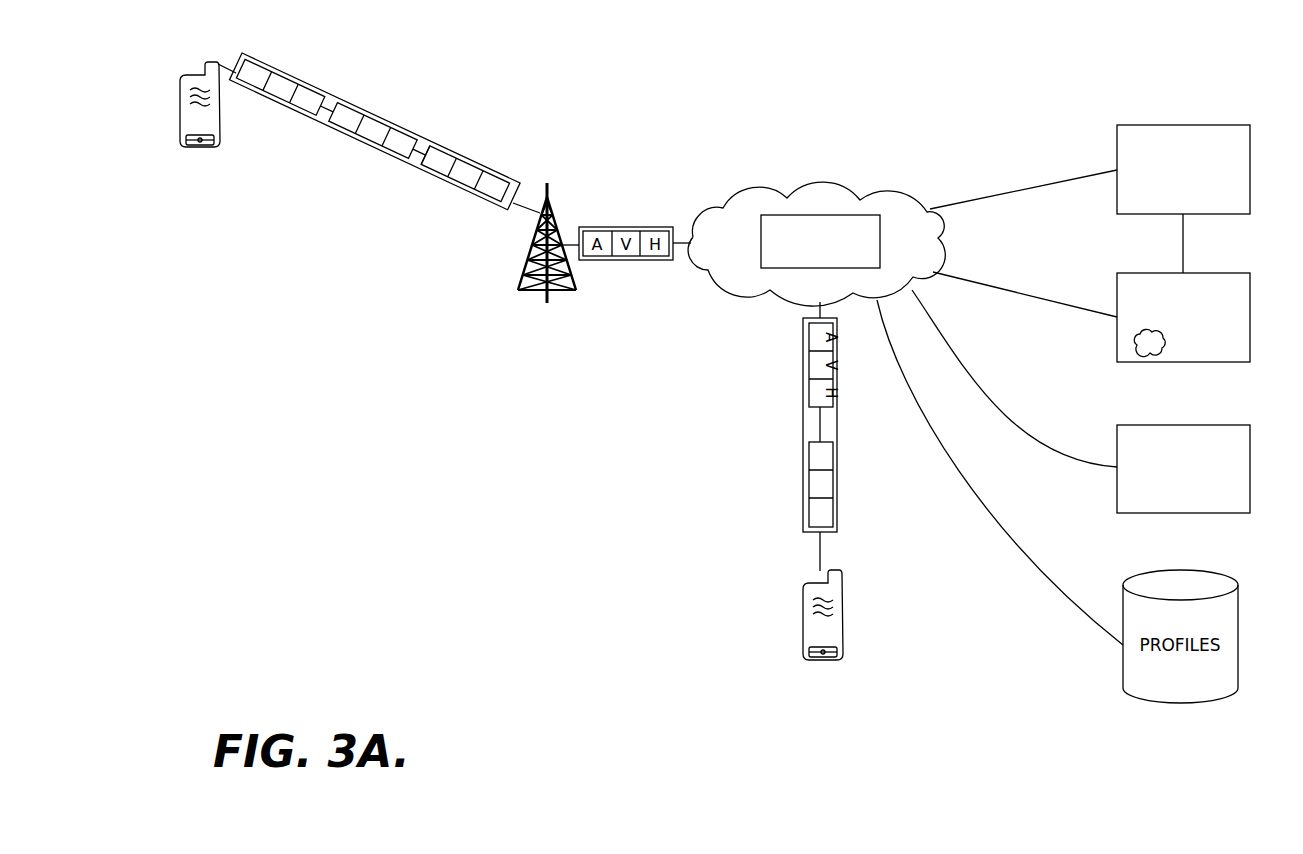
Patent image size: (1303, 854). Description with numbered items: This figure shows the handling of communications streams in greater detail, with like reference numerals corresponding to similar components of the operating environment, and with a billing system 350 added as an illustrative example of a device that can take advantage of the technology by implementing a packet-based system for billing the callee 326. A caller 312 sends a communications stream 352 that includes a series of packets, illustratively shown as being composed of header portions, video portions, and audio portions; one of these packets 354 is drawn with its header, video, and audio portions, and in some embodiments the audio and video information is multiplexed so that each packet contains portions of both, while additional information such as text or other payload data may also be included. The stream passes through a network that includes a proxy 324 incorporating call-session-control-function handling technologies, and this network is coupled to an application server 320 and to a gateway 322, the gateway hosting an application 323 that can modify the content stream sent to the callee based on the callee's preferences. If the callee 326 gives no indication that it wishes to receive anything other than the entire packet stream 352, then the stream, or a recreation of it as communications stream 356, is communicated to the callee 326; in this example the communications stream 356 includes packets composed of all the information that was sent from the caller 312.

The caller 312 is at (180, 113).
The communications stream 352 is at (378, 150).
The packet 354 is at (442, 181).
The proxy 324 is at (822, 182).
The application server 320 is at (1225, 214).
The gateway 322 is at (1205, 341).
The application 323 is at (1143, 352).
The billing system 350 is at (1225, 513).
The communications stream 356 is at (837, 483).
The callee 326 is at (843, 620).